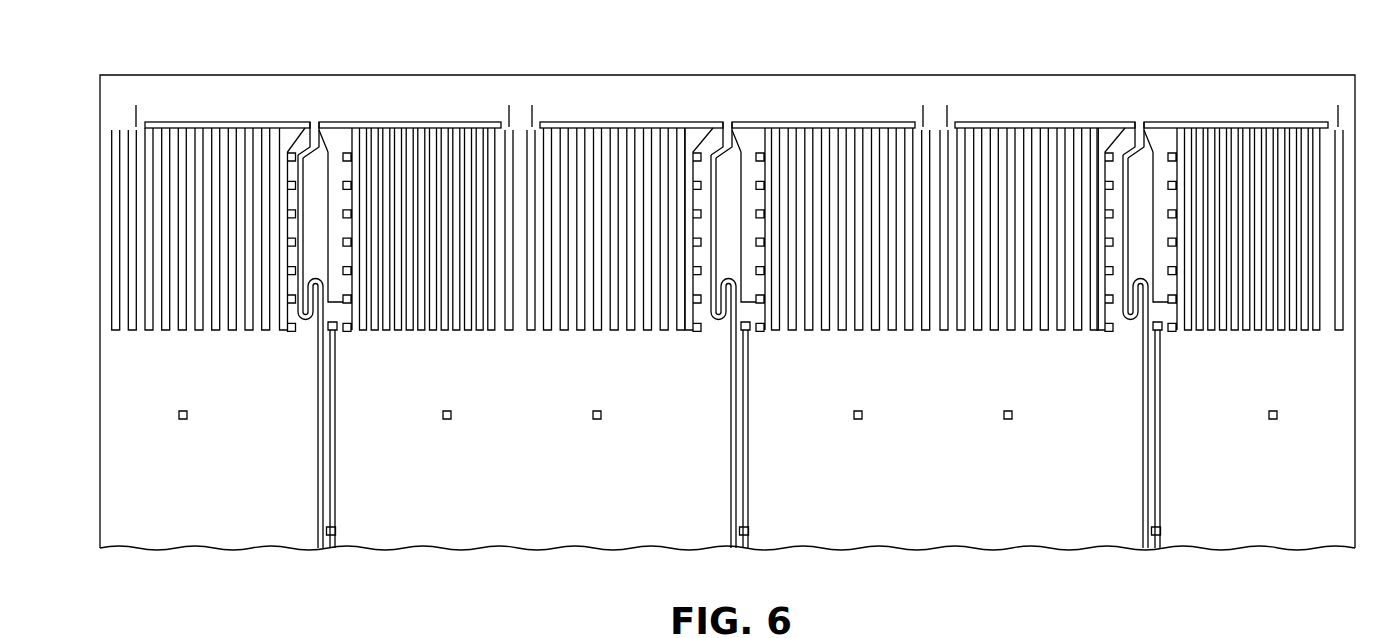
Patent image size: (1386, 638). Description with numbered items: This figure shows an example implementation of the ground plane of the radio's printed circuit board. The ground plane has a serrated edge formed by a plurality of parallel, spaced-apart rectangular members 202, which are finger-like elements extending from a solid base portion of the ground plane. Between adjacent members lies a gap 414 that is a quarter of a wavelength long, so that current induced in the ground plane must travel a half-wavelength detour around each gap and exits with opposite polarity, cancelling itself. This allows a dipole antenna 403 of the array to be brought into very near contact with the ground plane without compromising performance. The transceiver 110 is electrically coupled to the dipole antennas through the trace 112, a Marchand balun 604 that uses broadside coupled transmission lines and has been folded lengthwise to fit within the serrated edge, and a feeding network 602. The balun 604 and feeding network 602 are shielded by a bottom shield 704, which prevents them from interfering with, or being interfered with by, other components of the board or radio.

The gap 414 is at (455, 122).
The dipole antenna 403 is at (597, 122).
The bottom shield 704 is at (745, 150).
The rectangular members 202 is at (988, 122).
The balun 604 is at (736, 166).
The feeding network 602 is at (716, 331).
The trace 112 is at (730, 420).
The transceiver 110 is at (730, 576).